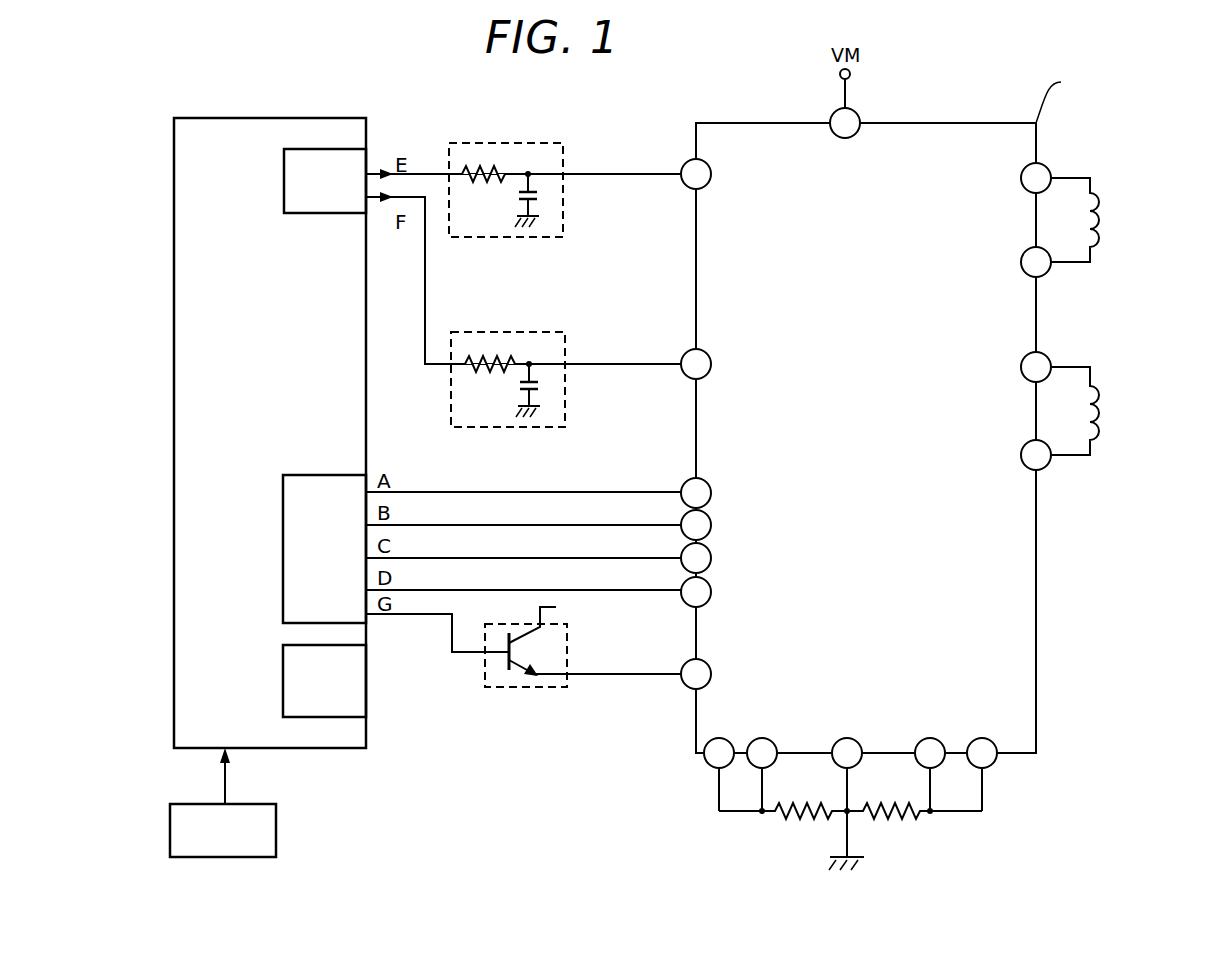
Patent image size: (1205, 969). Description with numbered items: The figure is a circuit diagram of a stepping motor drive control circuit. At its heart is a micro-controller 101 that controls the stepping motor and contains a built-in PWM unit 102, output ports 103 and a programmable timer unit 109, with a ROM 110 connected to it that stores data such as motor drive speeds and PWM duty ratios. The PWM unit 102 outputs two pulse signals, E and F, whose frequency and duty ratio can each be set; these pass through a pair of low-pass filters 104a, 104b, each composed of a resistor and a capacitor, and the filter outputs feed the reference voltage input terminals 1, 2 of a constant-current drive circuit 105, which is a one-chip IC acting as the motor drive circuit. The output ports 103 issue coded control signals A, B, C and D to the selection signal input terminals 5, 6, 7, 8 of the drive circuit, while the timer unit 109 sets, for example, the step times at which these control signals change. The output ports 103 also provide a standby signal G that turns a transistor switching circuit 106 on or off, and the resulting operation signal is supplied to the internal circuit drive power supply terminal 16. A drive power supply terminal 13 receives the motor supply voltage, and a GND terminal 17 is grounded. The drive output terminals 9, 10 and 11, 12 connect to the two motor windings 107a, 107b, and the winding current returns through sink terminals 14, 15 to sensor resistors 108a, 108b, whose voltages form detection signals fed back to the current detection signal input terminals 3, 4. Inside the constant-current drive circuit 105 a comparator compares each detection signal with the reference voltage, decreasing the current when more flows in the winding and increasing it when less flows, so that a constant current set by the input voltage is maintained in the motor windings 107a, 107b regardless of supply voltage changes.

The micro-controller 101 is at (250, 118).
The PWM unit 102 is at (348, 149).
The output ports 103 is at (337, 475).
The low-pass filter 104a is at (508, 143).
The low-pass filter 104b is at (497, 332).
The constant-current drive circuit 105 is at (985, 122).
The transistor switching circuit 106 is at (567, 643).
The motor winding 107a is at (1108, 230).
The motor winding 107b is at (1108, 418).
The sensor resistor 108a is at (797, 818).
The sensor resistor 108b is at (888, 818).
The timer unit 109 is at (366, 700).
The ROM 110 is at (276, 813).
The reference voltage input terminal 1 is at (696, 174).
The reference voltage input terminal 2 is at (696, 364).
The current detection signal input terminal 3 is at (719, 753).
The current detection signal input terminal 4 is at (982, 753).
The selection signal input terminal 5 is at (696, 493).
The selection signal input terminal 6 is at (696, 525).
The selection signal input terminal 7 is at (696, 558).
The selection signal input terminal 8 is at (696, 592).
The drive output terminal 9 is at (1036, 178).
The drive output terminal 10 is at (1036, 262).
The drive output terminal 11 is at (1036, 367).
The drive output terminal 12 is at (1036, 455).
The drive power supply terminal 13 is at (845, 123).
The sink terminal 14 is at (762, 753).
The sink terminal 15 is at (930, 753).
The internal circuit drive power supply terminal 16 is at (696, 674).
The GND terminal 17 is at (847, 753).